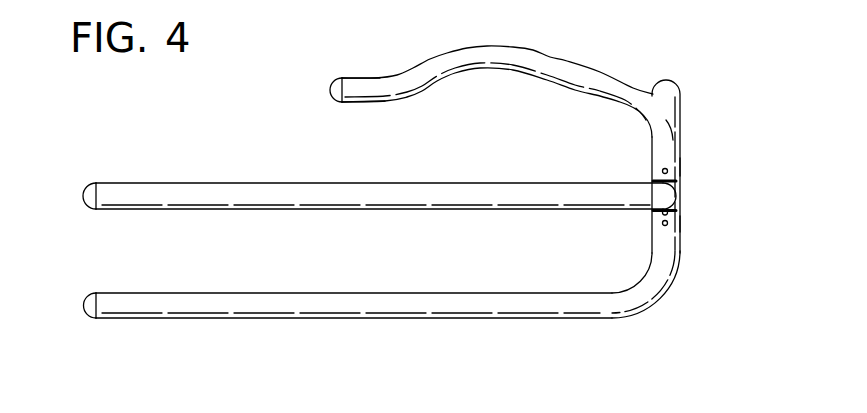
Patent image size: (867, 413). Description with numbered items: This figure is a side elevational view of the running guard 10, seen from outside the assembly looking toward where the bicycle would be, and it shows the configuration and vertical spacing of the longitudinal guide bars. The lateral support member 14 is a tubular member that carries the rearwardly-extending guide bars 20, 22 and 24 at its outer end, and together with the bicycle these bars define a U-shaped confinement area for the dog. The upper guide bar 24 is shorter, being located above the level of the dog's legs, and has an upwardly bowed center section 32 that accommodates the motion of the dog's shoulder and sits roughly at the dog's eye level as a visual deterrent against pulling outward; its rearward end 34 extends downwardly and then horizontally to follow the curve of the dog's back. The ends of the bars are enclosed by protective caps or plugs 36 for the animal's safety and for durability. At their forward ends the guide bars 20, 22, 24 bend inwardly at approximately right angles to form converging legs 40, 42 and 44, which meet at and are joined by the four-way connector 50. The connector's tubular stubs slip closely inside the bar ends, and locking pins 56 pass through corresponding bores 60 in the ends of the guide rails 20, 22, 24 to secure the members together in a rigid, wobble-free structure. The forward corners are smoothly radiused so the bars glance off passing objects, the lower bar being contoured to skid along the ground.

The running guard 10 is at (128, 115).
The lateral support member 14 is at (672, 100).
The guide bar 20 is at (283, 205).
The guide bar 22 is at (277, 313).
The upper guide bar 24 is at (563, 70).
The upwardly bowed center section 32 is at (488, 46).
The rearward end 34 is at (360, 85).
The protective caps or plugs 36 is at (330, 89).
The converging leg 40 is at (675, 188).
The converging leg 42 is at (668, 247).
The converging leg 44 is at (675, 128).
The 4-way connector 50 is at (675, 213).
The locking pins 56 is at (675, 164).
The bores 60 is at (648, 168).